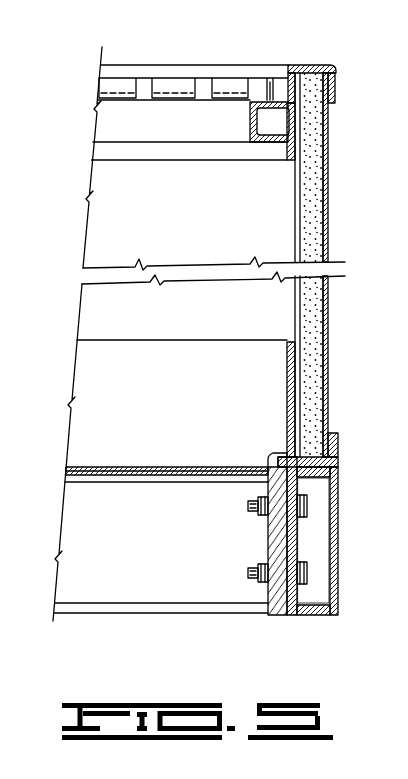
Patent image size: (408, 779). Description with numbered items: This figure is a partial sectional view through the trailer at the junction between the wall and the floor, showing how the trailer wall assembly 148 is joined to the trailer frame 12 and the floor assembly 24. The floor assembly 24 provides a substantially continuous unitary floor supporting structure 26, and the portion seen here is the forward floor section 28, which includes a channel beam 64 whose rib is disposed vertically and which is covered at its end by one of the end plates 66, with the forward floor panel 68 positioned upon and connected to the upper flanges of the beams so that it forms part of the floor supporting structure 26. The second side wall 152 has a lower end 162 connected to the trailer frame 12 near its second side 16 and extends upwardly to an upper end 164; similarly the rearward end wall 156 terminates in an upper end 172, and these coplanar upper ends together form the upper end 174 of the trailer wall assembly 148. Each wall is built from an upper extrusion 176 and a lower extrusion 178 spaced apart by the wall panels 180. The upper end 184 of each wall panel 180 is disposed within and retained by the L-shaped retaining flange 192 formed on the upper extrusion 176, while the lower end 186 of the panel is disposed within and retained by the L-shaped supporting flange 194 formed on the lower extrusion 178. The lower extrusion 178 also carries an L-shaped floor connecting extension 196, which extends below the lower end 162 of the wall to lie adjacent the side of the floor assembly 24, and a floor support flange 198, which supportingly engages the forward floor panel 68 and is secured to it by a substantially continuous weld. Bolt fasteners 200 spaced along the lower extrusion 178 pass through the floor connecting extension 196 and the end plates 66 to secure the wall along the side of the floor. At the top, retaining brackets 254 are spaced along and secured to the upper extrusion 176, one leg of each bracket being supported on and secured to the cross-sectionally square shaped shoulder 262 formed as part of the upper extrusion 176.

The trailer frame 12 is at (338, 573).
The second side 16 is at (338, 598).
The floor assembly 24 is at (82, 463).
The floor supporting structure 26 is at (103, 460).
The forward floor section 28 is at (97, 518).
The channel beam 64 is at (180, 613).
The end plates 66 is at (275, 532).
The forward floor panel 68 is at (156, 467).
The trailer wall assembly 148 is at (329, 186).
The second side wall 152 is at (331, 146).
The rearward end wall 156 is at (116, 212).
The lower end of second side wall 162 is at (334, 447).
The upper end of second side wall 164 is at (326, 82).
The upper end of rearward end wall 172 is at (110, 65).
The upper end of trailer wall assembly 174 is at (177, 64).
The upper extrusion 176 is at (298, 68).
The lower extrusion 178 is at (290, 388).
The wall panels 180 is at (326, 228).
The upper end of wall panel 184 is at (306, 66).
The lower end of wall panel 186 is at (338, 474).
The L-shaped retaining flange 192 is at (334, 91).
The L-shaped supporting flange 194 is at (336, 436).
The floor connecting extension 196 is at (296, 533).
The floor support flange 198 is at (268, 460).
The bolt fasteners 200 is at (248, 505).
The retaining brackets 254 is at (118, 85).
The square shaped shoulder 262 is at (250, 108).